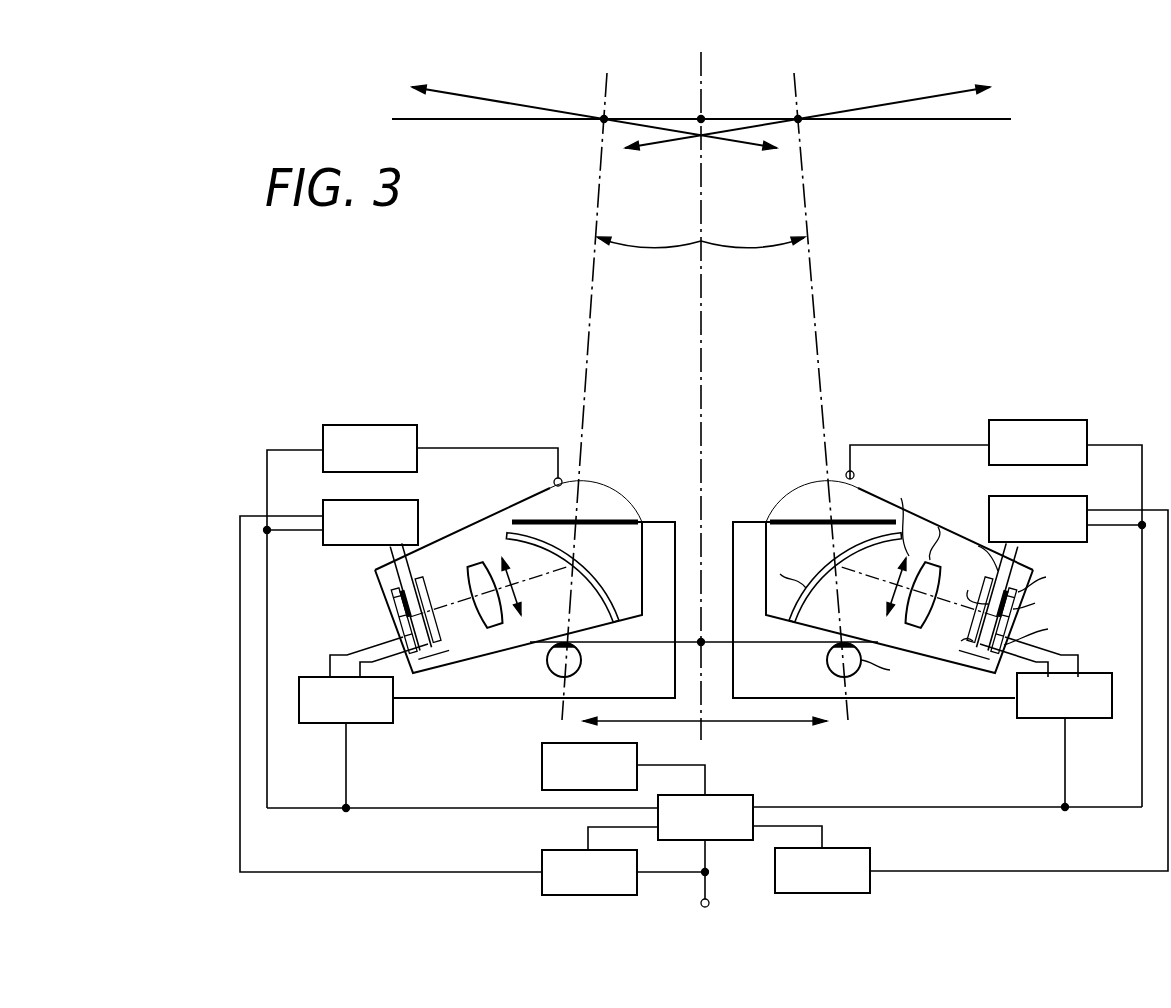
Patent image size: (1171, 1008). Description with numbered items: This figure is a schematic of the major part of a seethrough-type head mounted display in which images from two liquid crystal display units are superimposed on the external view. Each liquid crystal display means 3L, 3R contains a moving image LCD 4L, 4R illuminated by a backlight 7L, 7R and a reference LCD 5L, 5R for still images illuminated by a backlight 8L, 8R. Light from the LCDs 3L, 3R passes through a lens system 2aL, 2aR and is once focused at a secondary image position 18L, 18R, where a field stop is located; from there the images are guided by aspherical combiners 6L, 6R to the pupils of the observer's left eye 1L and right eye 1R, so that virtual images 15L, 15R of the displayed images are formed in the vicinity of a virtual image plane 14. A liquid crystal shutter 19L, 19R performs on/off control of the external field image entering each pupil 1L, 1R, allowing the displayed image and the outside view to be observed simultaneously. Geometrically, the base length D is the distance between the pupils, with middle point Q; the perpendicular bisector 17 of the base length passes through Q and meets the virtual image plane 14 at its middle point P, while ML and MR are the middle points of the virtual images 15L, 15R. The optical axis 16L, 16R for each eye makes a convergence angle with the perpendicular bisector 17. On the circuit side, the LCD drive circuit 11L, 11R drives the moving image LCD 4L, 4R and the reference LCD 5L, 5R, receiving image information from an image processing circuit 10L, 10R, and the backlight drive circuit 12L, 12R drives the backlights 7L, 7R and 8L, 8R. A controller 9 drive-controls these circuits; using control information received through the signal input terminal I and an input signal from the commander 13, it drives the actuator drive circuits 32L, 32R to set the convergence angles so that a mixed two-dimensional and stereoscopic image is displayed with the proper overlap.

The virtual image plane 14 is at (987, 117).
The virtual image 15L is at (523, 104).
The virtual image 15R is at (897, 102).
The middle point of the virtual image ML is at (601, 116).
The middle point of the virtual image MR is at (802, 116).
The middle point of the virtual image plane P is at (699, 116).
The optical axis 16L is at (586, 327).
The optical axis 16R is at (818, 326).
The perpendicular bisector 17 is at (703, 326).
The liquid crystal display means 3L is at (445, 694).
The liquid crystal display means 3R is at (988, 686).
The liquid crystal shutter 19L is at (612, 519).
The liquid crystal shutter 19R is at (821, 495).
The aspherical combiner 6L is at (602, 588).
The aspherical combiner 6R is at (827, 578).
The lens system 2aL is at (478, 560).
The lens system 2aR is at (934, 565).
The secondary image position 18L is at (499, 556).
The secondary image position 18R is at (904, 541).
The left eye 1L is at (547, 660).
The right eye 1R is at (870, 664).
The moving image LCD 4L is at (420, 604).
The moving image LCD 4R is at (974, 598).
The reference LCD 5L is at (410, 571).
The reference LCD 5R is at (972, 593).
The backlight 7L is at (395, 609).
The backlight 7R is at (1037, 597).
The backlight 8L is at (390, 592).
The backlight 8R is at (1041, 599).
The middle point of the base length Q is at (703, 646).
The base length D is at (687, 722).
The actuator drive circuit 32L is at (414, 616).
The actuator drive circuit 32R is at (994, 613).
The backlight drive circuit 12L is at (391, 686).
The backlight drive circuit 12R is at (1019, 683).
The LCD drive circuit 11L is at (462, 724).
The LCD drive circuit 11R is at (947, 724).
The commander 13 is at (623, 769).
The controller 9 is at (705, 847).
The image processing circuit 10L is at (625, 872).
The image processing circuit 10R is at (822, 870).
The signal input terminal I is at (709, 902).